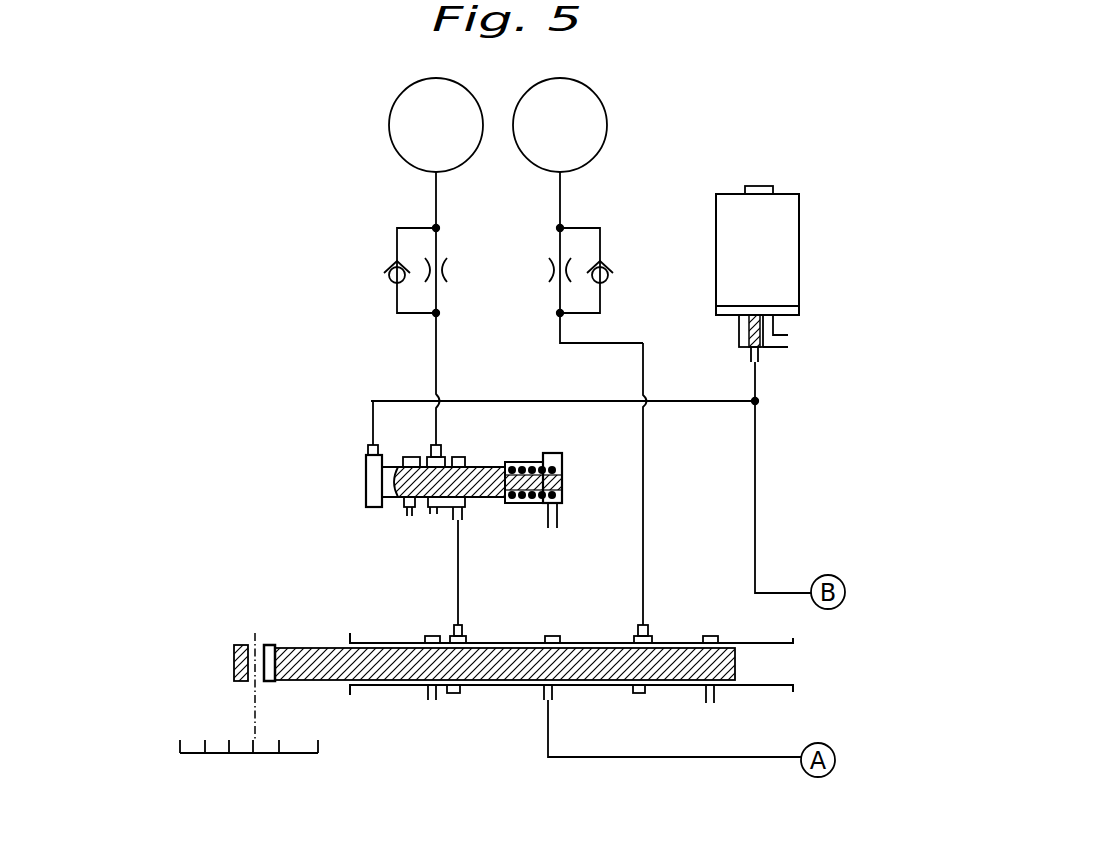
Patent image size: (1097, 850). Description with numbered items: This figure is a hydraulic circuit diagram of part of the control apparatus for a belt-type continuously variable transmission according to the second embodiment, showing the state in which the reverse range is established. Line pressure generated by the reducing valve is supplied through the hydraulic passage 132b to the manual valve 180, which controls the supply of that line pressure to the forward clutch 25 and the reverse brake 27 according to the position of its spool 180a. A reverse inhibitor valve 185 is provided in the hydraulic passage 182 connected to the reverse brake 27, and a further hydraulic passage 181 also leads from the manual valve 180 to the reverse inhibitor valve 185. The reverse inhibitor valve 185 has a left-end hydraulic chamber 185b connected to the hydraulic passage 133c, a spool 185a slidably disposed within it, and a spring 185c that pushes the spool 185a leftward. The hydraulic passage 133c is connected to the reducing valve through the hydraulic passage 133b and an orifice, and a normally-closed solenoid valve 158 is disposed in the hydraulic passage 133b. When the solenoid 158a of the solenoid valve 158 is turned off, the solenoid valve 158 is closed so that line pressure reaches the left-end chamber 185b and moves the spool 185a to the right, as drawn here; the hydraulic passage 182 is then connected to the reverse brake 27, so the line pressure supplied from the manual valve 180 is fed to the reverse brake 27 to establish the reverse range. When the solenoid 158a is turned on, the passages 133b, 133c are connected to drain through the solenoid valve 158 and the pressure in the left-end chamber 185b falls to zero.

The reverse brake 27 is at (418, 143).
The forward clutch 25 is at (542, 143).
The solenoid valve 158 is at (795, 293).
The solenoid 158a is at (757, 250).
The reverse inhibitor valve 185 is at (350, 422).
The spool 185a is at (487, 467).
The left-end hydraulic chamber 185b is at (376, 483).
The spring 185c is at (530, 498).
The hydraulic passage 133c is at (692, 404).
The hydraulic passage 133b is at (757, 497).
The hydraulic passage 181 is at (644, 588).
The hydraulic passage 182 is at (459, 586).
The manual valve 180 is at (332, 618).
The spool 180a is at (487, 665).
The hydraulic passage 132b is at (607, 757).